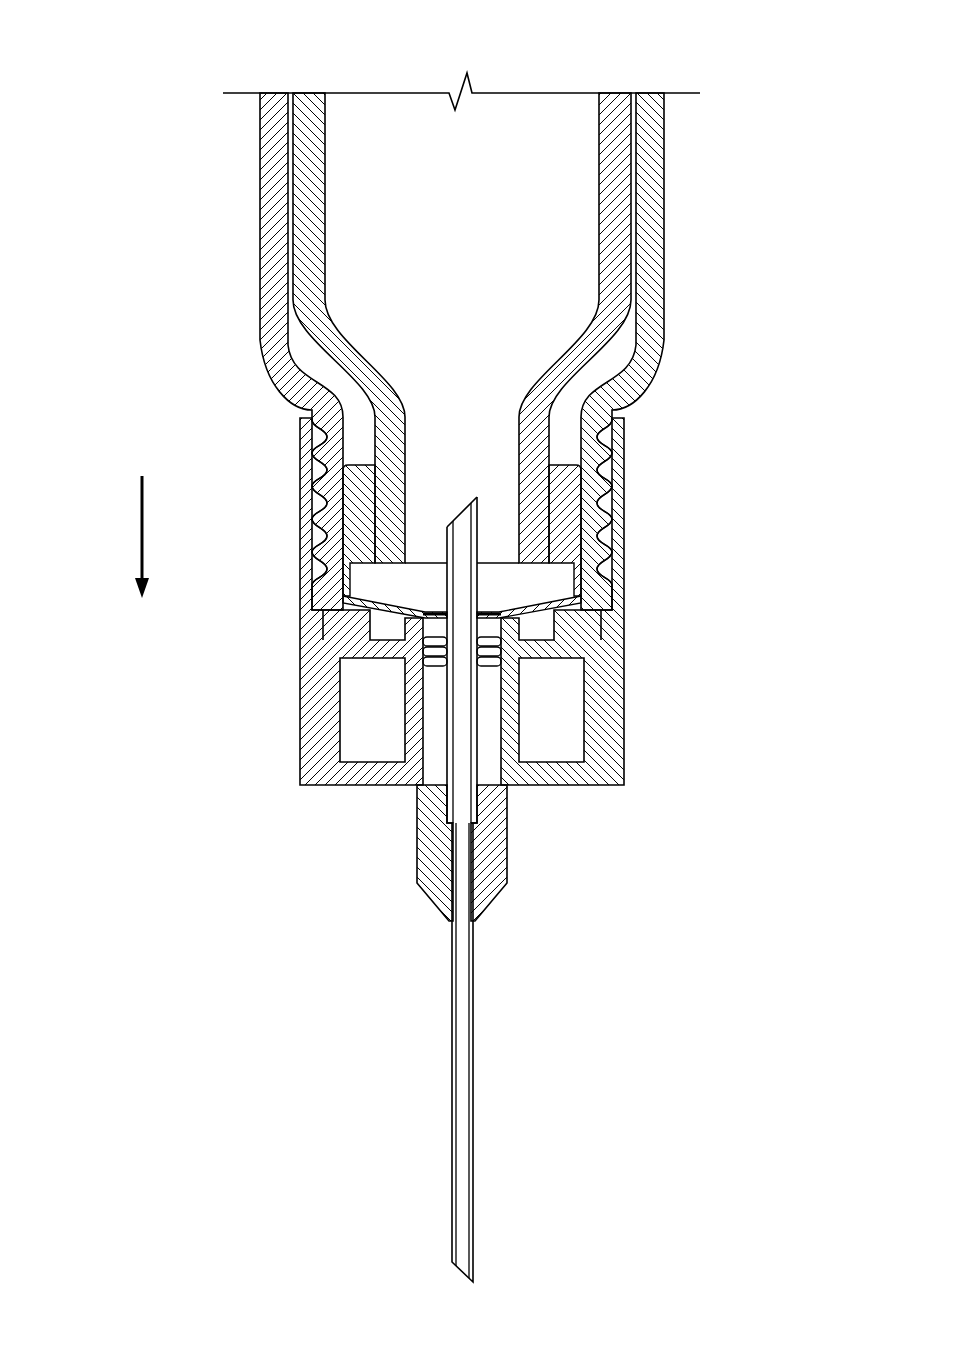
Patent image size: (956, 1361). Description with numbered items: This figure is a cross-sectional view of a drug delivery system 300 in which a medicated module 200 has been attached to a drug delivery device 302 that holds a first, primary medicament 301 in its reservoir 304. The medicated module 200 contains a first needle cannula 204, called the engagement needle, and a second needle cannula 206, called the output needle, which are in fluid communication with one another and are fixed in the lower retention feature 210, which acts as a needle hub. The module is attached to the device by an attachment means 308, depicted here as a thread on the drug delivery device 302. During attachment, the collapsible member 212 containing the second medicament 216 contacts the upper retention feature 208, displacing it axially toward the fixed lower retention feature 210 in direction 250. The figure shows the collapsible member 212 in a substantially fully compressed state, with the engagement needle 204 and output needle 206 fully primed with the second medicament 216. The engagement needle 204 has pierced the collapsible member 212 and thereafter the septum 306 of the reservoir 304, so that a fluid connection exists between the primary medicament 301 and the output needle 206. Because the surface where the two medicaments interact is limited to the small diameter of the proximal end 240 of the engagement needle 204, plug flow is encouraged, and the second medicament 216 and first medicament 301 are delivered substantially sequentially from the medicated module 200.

The drug delivery system 300 is at (229, 47).
The first, primary medicament 301 is at (518, 119).
The drug delivery device 302 is at (237, 128).
The reservoir 304 is at (307, 102).
The septum 306 is at (555, 570).
The attachment means 308 is at (327, 446).
The medicated module 200 is at (194, 436).
The first needle cannula 204 is at (478, 803).
The second needle cannula 206 is at (477, 1177).
The upper retention feature 208 is at (322, 641).
The lower retention feature 210 is at (397, 859).
The collapsible member 212 is at (422, 650).
The second medicament 216 is at (448, 794).
The proximal end of the engagement needle 240 is at (457, 512).
The direction 250 is at (141, 538).